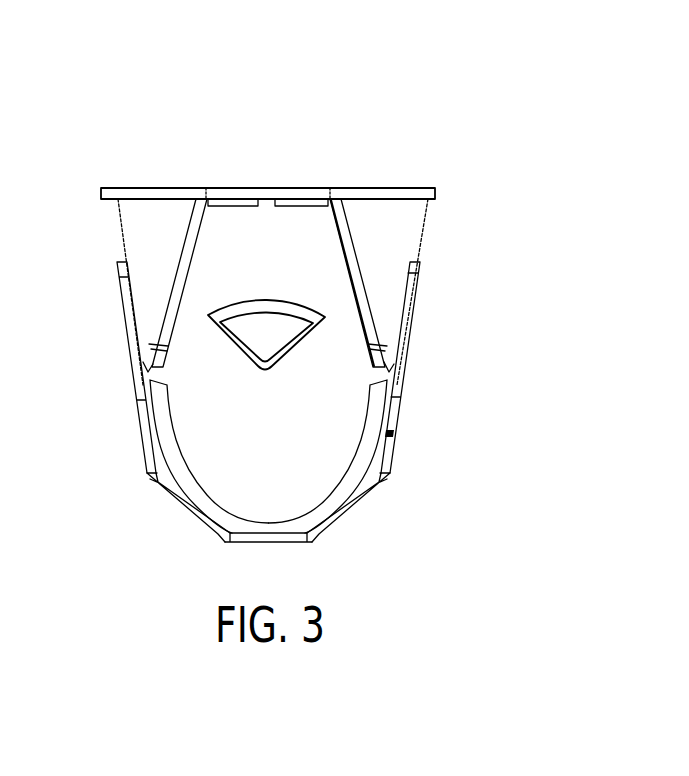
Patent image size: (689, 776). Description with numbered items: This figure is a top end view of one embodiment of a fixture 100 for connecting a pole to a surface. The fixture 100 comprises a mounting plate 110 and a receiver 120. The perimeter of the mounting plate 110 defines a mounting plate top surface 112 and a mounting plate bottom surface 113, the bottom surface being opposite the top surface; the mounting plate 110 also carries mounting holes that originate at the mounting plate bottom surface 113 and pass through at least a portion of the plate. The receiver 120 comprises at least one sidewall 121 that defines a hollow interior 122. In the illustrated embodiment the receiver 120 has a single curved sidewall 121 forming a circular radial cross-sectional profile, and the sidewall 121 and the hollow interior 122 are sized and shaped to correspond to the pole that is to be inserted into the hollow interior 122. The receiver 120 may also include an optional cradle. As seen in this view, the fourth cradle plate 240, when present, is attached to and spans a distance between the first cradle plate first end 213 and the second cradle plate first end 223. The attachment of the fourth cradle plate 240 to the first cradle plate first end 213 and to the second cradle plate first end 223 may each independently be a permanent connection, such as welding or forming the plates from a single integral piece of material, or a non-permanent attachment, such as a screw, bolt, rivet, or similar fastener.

The fixture 100 is at (412, 72).
The mounting plate 110 is at (456, 190).
The mounting plate top surface 112 is at (428, 202).
The mounting plate bottom surface 113 is at (358, 188).
The receiver 120 is at (390, 433).
The sidewall 121 is at (370, 490).
The hollow interior 122 is at (252, 340).
The first cradle plate first end 213 is at (140, 408).
The second cradle plate first end 223 is at (400, 407).
The fourth cradle plate 240 is at (210, 481).